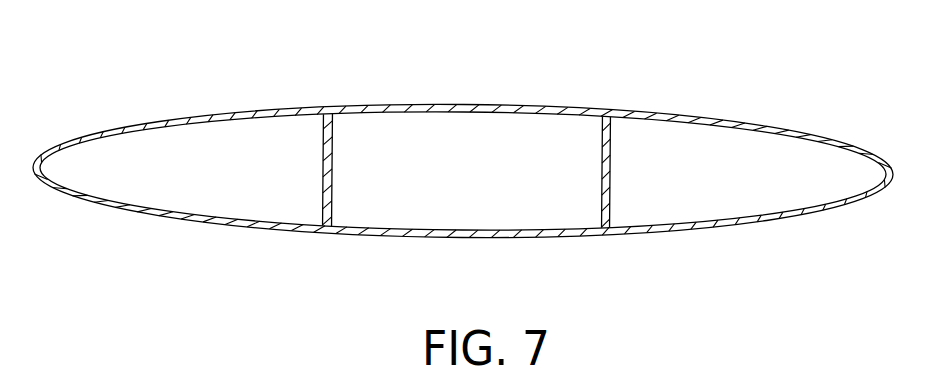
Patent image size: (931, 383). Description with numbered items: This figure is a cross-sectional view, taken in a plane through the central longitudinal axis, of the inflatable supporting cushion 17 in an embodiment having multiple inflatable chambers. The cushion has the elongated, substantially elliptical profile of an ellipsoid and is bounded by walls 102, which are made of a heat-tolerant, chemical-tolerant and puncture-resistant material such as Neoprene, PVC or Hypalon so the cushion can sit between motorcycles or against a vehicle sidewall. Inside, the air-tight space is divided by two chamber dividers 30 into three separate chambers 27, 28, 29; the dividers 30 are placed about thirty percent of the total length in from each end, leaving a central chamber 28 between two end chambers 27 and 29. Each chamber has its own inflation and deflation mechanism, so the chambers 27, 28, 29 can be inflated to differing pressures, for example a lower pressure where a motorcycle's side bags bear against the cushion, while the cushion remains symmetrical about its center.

The inflatable supporting cushion 17 is at (650, 105).
The walls 102 is at (435, 104).
The chamber dividers 30 is at (323, 197).
The chamber 27 is at (180, 180).
The chamber 28 is at (469, 184).
The chamber 29 is at (720, 196).